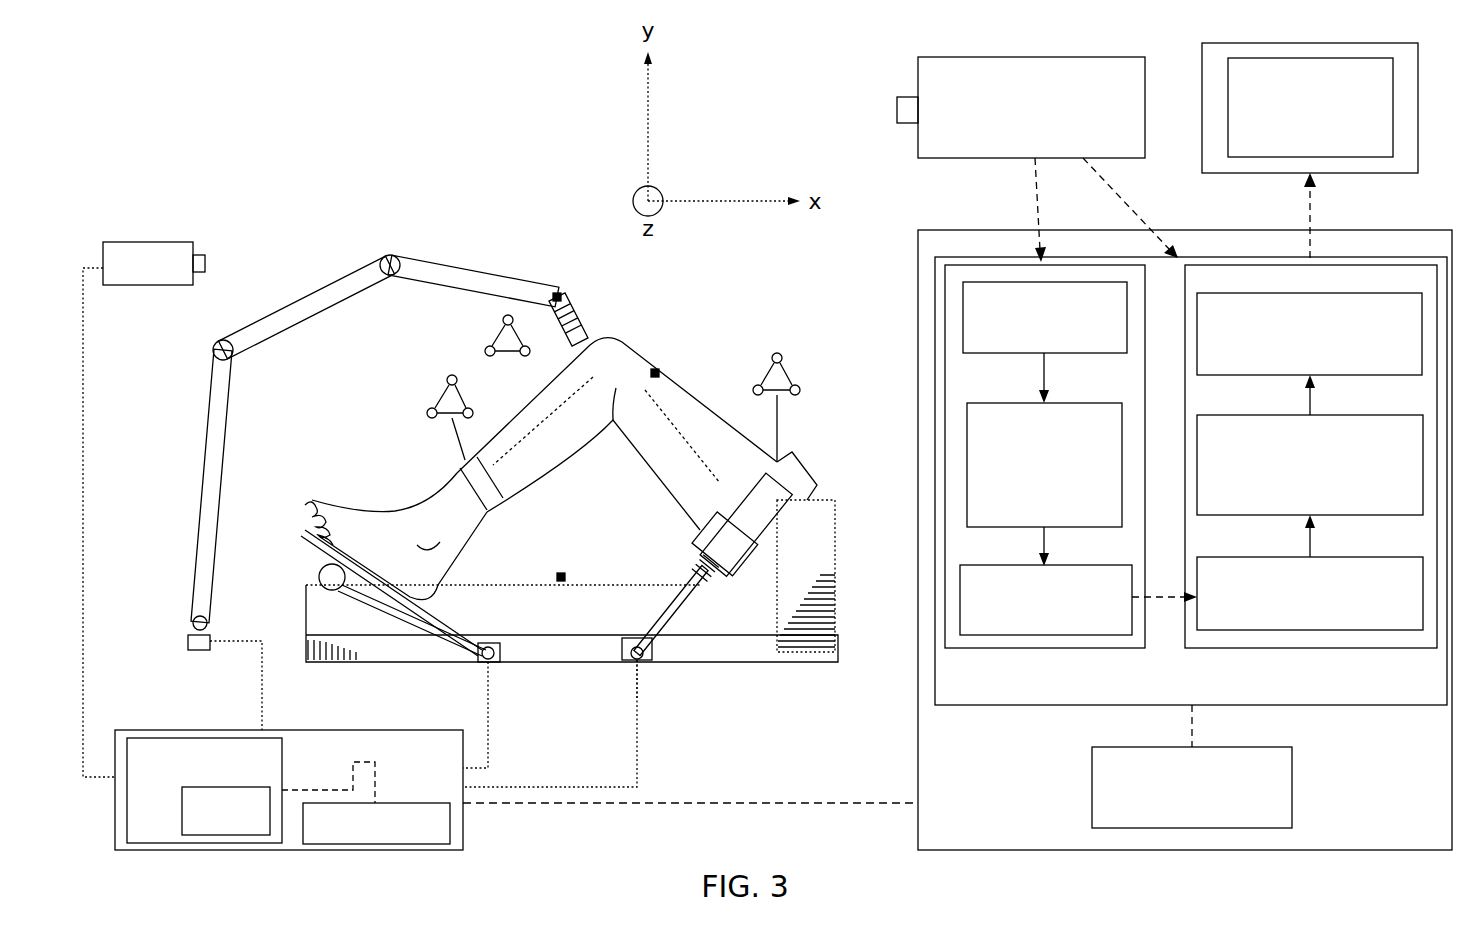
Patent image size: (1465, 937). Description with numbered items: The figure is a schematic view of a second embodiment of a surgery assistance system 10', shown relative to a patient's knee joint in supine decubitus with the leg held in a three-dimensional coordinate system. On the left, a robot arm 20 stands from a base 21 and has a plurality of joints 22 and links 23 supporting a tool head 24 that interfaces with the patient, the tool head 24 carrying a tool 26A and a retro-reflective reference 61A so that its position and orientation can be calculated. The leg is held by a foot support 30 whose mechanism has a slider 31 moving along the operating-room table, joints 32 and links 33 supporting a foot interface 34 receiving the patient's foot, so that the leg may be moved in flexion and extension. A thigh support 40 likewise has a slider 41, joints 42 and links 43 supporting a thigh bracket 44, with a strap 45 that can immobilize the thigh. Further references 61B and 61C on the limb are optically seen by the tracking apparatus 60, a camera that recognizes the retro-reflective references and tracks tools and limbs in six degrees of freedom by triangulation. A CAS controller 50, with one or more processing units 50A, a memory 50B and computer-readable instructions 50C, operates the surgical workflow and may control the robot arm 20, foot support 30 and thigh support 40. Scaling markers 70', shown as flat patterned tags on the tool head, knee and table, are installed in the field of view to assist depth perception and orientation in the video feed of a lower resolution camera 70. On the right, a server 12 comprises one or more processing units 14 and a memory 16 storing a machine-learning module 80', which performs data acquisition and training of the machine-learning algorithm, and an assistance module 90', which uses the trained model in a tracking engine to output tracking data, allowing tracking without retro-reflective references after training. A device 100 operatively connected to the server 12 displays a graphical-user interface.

The surgery assistance system 10' is at (820, 232).
The server 12 is at (1185, 540).
The processing unit 14 is at (1192, 787).
The non-transitory computer-readable memory 16 is at (1045, 475).
The robot arm 20 is at (298, 258).
The base 21 is at (188, 641).
The joints 22 is at (213, 350).
The links 23 is at (470, 262).
The tool head 24 is at (580, 330).
The tool 26A is at (590, 335).
The foot support 30 is at (490, 592).
The slider 31 is at (505, 660).
The joints 32 is at (320, 576).
The links 33 is at (345, 566).
The foot interface 34 is at (425, 592).
The thigh support 40 is at (655, 590).
The slider 41 is at (655, 655).
The joints 42 is at (641, 662).
The links 43 is at (683, 608).
The thigh bracket 44 is at (755, 585).
The strap 45 is at (800, 478).
The CAS controller 50 is at (176, 730).
The processing unit 50A is at (376, 823).
The non-transitory computer-readable memory 50B is at (204, 790).
The computer-readable instructions 50C is at (226, 811).
The tracking apparatus 60 is at (152, 242).
The retro-reflective reference 61A is at (490, 345).
The retro-reflective reference 61B is at (460, 430).
The retro-reflective reference 61C is at (780, 414).
The camera 70 is at (1021, 87).
The scaling markers 70' is at (638, 387).
The machine-learning module 80' is at (1159, 638).
The assistance module 90' is at (1311, 474).
The device 100 is at (1225, 43).